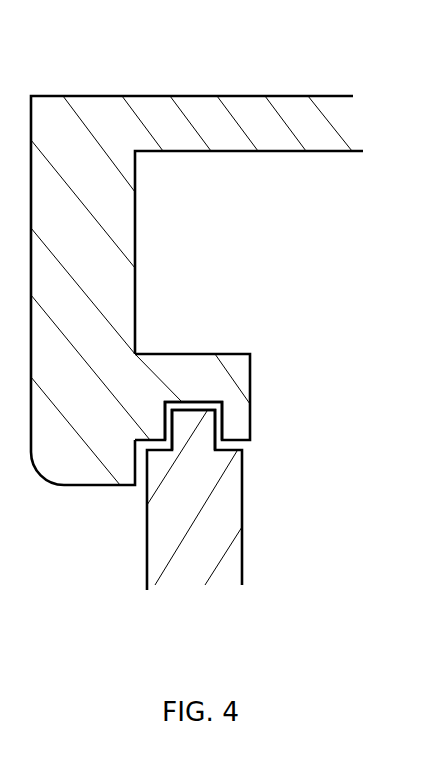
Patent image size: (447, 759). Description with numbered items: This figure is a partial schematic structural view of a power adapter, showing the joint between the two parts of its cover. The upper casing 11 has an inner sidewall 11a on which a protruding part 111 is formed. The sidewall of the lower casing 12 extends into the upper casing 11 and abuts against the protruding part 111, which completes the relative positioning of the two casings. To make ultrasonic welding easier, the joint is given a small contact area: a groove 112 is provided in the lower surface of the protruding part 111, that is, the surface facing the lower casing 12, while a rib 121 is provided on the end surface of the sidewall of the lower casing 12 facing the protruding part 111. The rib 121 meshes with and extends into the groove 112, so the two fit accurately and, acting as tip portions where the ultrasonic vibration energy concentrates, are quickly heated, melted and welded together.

The upper casing 11 is at (246, 135).
The inner sidewall 11a is at (158, 266).
The protruding part 111 is at (235, 417).
The groove 112 is at (192, 407).
The lower casing 12 is at (157, 540).
The rib 121 is at (202, 445).